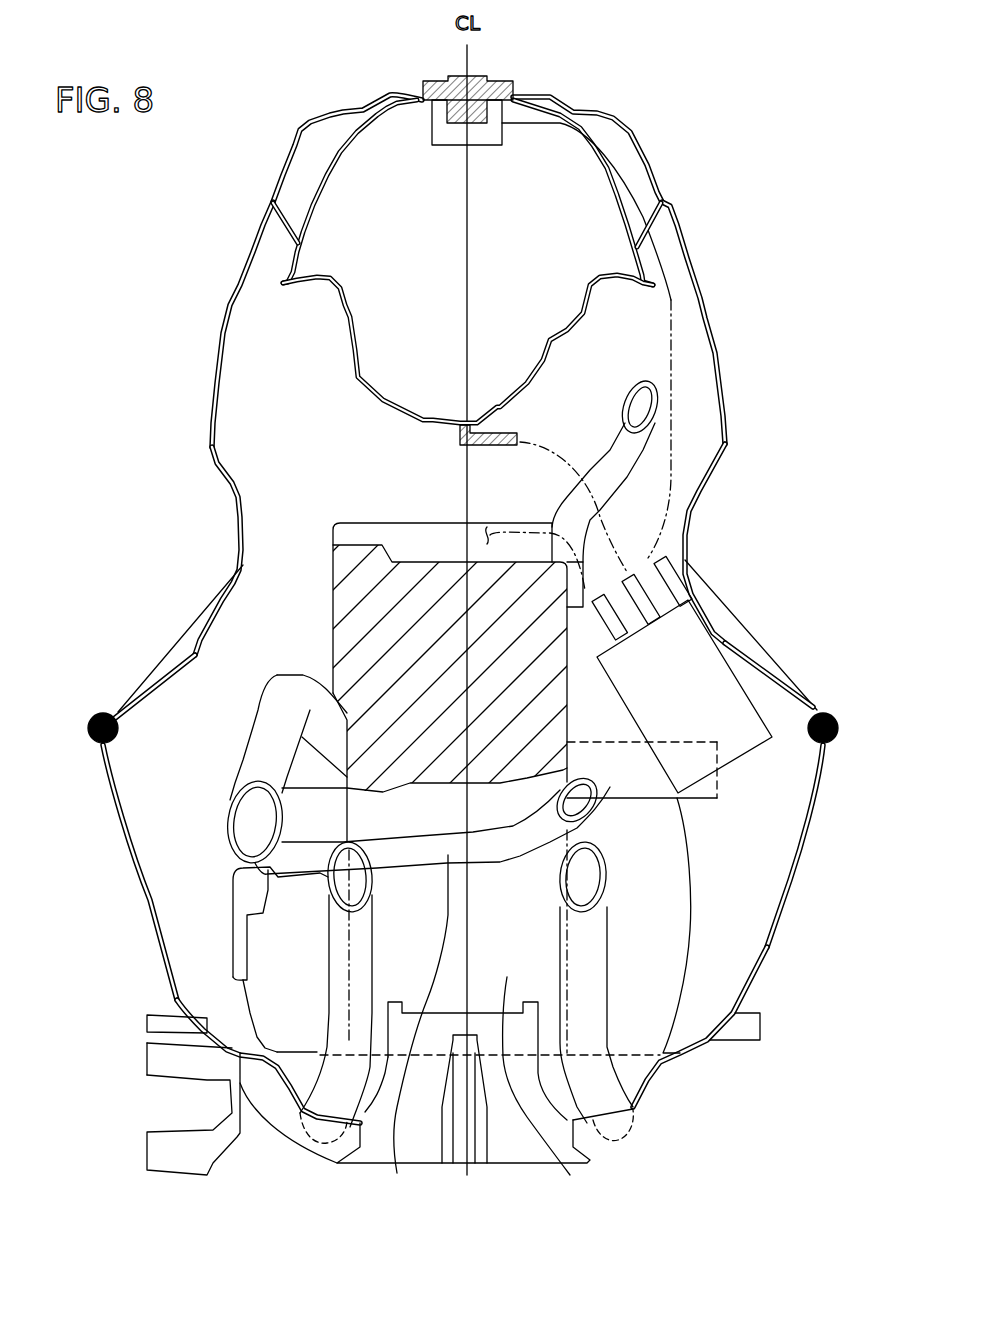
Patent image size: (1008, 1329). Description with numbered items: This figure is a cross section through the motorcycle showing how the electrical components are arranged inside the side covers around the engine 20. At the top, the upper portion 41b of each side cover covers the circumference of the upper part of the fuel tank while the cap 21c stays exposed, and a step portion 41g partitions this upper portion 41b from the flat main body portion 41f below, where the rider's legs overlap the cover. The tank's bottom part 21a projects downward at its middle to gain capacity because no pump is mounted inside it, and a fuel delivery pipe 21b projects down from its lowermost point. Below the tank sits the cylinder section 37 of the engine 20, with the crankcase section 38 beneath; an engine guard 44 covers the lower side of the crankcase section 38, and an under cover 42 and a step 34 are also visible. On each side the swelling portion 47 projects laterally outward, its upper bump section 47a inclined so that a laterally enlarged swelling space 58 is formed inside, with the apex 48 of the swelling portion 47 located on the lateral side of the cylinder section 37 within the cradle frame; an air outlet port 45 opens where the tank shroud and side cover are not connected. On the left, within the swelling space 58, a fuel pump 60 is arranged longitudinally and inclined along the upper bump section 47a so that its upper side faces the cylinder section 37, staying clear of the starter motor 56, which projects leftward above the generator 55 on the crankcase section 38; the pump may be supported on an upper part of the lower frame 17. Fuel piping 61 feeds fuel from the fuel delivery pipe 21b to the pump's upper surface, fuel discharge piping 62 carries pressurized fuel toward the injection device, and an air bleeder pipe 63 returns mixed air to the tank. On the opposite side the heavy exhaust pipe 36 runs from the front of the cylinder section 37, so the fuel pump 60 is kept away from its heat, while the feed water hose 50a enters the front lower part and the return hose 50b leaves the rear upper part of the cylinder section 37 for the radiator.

The lower frame 17 is at (337, 1003).
The engine 20 is at (237, 922).
The bottom part 21a is at (390, 400).
The fuel delivery pipe 21b is at (455, 435).
The cap 21c is at (481, 75).
The step 34 is at (160, 1058).
The exhaust pipe 36 is at (262, 728).
The cylinder section 37 is at (340, 607).
The crankcase section 38 is at (553, 1130).
The upper portion 41b is at (300, 128).
The main body portion 41f is at (225, 345).
The step portion 41g is at (270, 201).
The under cover 42 is at (292, 1097).
The engine guard 44 is at (513, 1143).
The air outlet port 45 is at (243, 530).
The swelling portion 47 is at (123, 820).
The upper bump section 47a is at (190, 632).
The apex 48 is at (103, 712).
The feed water hose 50a is at (397, 1173).
The return hose 50b is at (637, 450).
The generator 55 is at (680, 933).
The starter motor 56 is at (700, 800).
The swelling space 58 is at (197, 813).
The fuel pump 60 is at (750, 690).
The fuel piping 61 is at (629, 578).
The fuel discharge piping 62 is at (607, 632).
The air bleeder pipe 63 is at (652, 560).